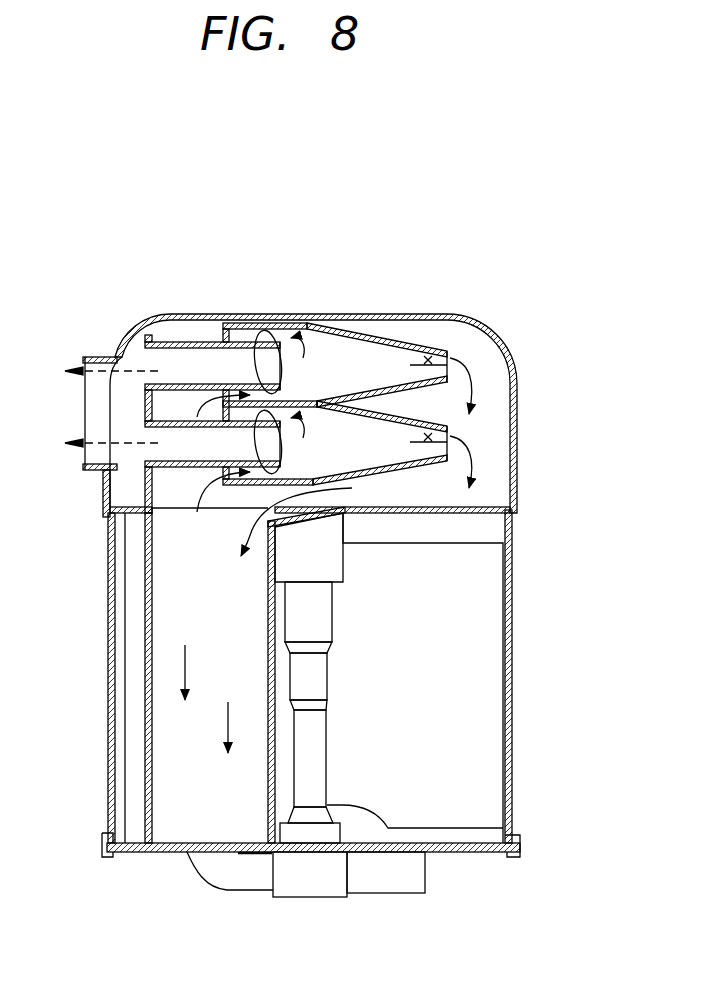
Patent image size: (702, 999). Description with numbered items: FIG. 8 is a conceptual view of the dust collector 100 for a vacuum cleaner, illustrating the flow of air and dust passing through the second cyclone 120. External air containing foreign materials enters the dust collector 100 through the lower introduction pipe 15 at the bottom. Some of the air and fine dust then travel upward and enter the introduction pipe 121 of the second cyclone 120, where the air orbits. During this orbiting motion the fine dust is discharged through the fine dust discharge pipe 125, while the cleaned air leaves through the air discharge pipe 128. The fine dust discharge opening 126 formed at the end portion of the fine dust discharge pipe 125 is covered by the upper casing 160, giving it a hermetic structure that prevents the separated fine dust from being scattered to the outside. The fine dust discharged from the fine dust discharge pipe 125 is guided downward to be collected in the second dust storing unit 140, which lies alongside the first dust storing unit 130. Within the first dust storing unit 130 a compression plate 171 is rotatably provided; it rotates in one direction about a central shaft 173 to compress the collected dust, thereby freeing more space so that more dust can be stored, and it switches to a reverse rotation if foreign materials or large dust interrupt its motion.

The dust collector 100 is at (498, 312).
The second cyclone 120 is at (370, 218).
The air discharge pipe 128 is at (203, 342).
The introduction pipe 121 is at (278, 323).
The fine dust discharge pipe 125 is at (355, 333).
The fine dust discharge opening 126 is at (440, 362).
The upper casing 160 is at (517, 460).
The first dust storing unit 130 is at (512, 673).
The second dust storing unit 140 is at (145, 642).
The compression plate 171 is at (470, 714).
The central shaft 173 is at (313, 765).
The lower introduction pipe 15 is at (208, 866).